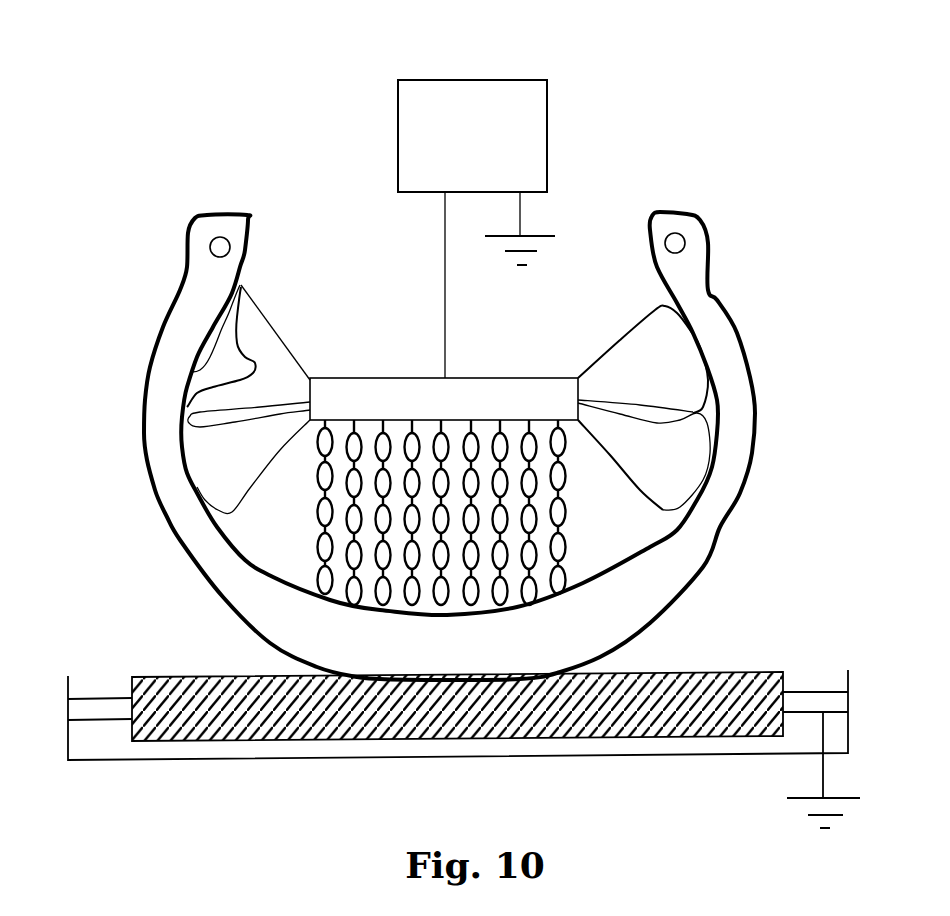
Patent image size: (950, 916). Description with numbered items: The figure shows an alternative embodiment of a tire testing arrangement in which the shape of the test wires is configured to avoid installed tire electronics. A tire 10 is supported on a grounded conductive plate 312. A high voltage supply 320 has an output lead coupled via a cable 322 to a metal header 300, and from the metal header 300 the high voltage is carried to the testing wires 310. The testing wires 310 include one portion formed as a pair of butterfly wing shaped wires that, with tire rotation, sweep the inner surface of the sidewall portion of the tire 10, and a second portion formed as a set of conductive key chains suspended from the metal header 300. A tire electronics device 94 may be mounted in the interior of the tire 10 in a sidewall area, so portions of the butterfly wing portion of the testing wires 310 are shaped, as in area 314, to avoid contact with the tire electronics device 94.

The tire 10 is at (187, 242).
The tire electronics device 94 is at (242, 287).
The metal header 300 is at (493, 378).
The test wires 310 is at (270, 313).
The grounded conductive plate 312 is at (320, 733).
The area 314 is at (240, 383).
The high voltage supply 320 is at (513, 80).
The cable 322 is at (445, 257).